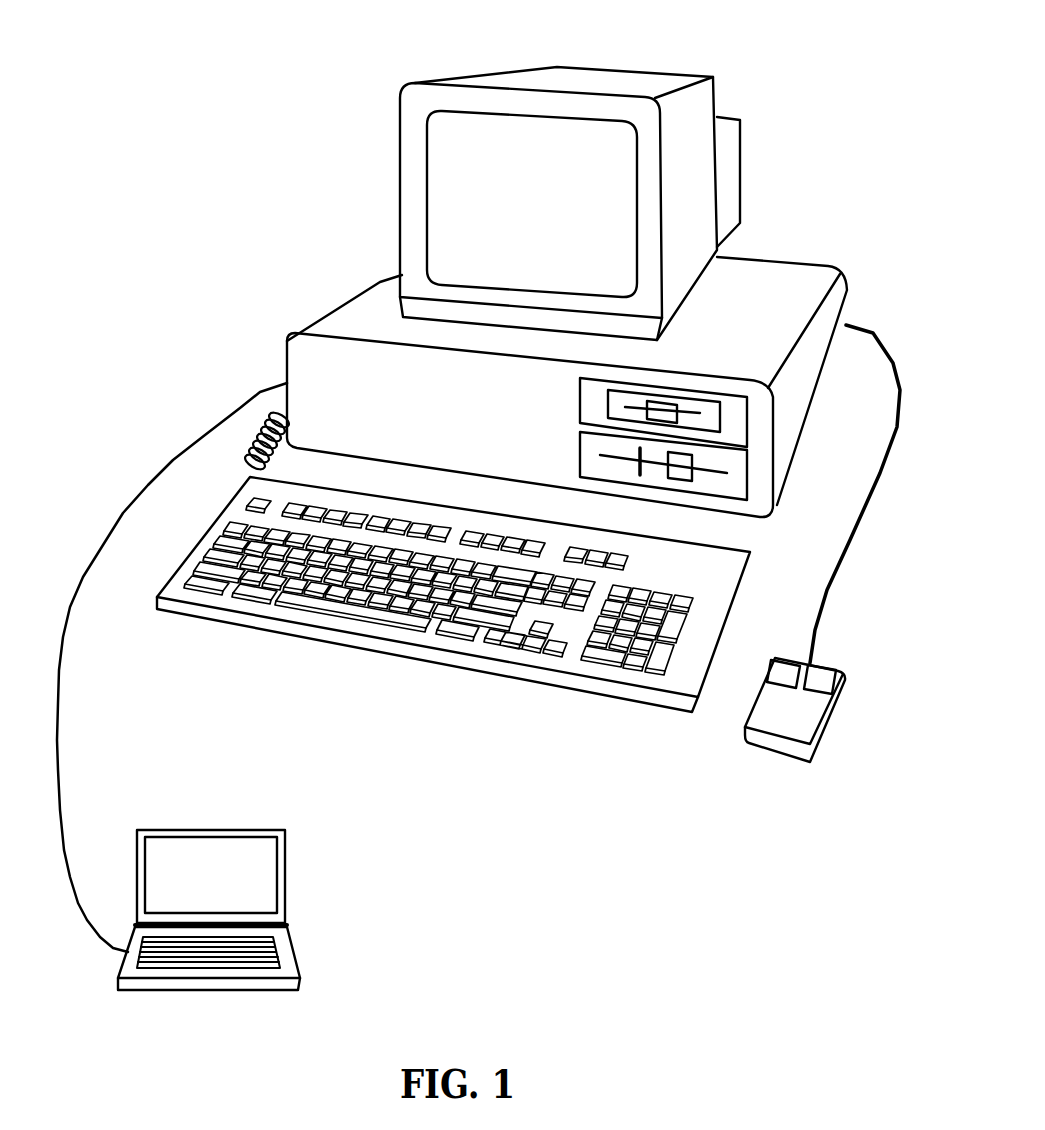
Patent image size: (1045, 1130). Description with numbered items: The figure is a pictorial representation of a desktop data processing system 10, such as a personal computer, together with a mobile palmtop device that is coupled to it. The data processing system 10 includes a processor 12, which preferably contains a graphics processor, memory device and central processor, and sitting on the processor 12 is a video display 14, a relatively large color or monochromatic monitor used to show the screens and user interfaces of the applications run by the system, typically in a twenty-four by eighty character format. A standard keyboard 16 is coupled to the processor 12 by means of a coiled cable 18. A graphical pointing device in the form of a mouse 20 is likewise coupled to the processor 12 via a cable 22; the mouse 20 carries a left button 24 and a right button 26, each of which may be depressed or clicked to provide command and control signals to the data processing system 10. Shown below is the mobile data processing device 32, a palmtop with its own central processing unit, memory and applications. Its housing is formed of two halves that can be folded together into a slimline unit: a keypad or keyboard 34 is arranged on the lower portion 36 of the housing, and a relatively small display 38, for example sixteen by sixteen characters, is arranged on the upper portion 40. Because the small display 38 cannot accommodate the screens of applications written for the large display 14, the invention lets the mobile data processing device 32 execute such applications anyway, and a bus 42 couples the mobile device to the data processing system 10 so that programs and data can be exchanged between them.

The data processing system 10 is at (329, 141).
The processor 12 is at (787, 487).
The video display 14 is at (730, 145).
The keyboard 16 is at (312, 617).
The cable 18 is at (245, 471).
The mouse 20 is at (812, 755).
The cable 22 is at (822, 605).
The left button 24 is at (780, 668).
The right button 26 is at (576, 142).
The mobile data processing device 32 is at (266, 905).
The keypad or keyboard 34 is at (247, 967).
The lower portion 36 is at (287, 953).
The display 38 is at (227, 850).
The upper portion 40 is at (145, 830).
The bus 42 is at (92, 933).